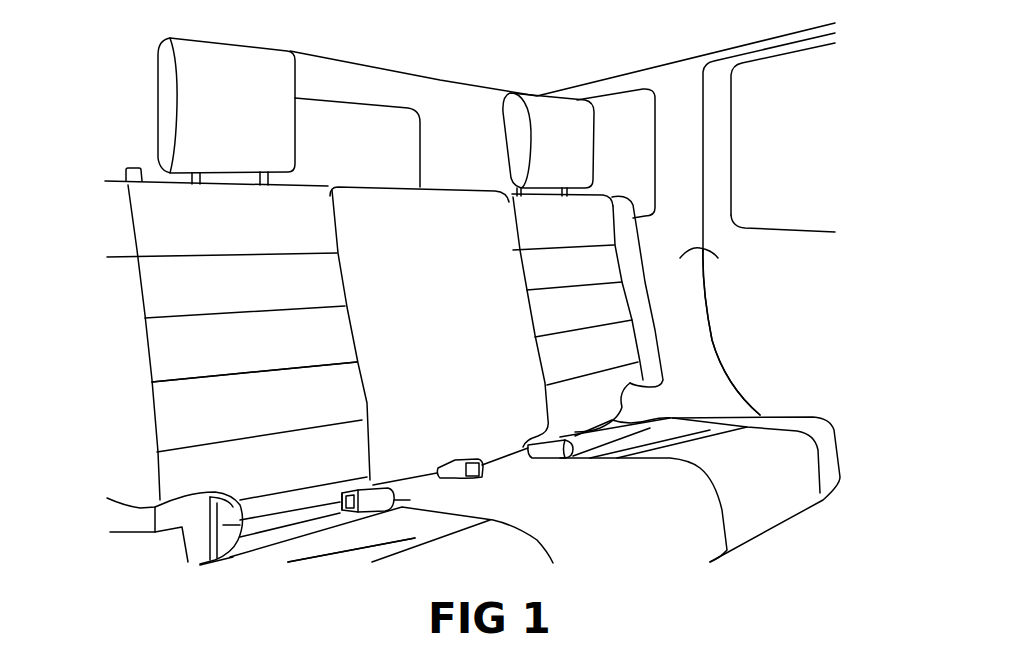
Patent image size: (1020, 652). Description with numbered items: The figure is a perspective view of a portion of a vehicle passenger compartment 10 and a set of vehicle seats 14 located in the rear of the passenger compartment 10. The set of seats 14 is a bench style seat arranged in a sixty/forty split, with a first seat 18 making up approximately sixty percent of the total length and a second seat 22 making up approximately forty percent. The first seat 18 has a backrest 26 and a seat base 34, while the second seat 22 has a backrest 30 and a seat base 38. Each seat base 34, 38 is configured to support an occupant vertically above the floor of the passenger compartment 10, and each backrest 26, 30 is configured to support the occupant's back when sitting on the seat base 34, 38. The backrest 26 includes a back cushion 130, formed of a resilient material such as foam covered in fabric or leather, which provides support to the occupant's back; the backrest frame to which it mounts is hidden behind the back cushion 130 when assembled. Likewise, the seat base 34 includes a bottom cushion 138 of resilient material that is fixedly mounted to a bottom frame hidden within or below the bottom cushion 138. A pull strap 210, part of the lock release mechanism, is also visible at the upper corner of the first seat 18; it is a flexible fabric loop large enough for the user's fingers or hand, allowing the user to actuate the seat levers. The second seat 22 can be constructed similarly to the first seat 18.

The vehicle passenger compartment 10 is at (462, 93).
The pull strap 210 is at (128, 168).
The first seat 18 is at (178, 288).
The backrest 26 is at (172, 353).
The back cushion 130 is at (182, 415).
The second seat 22 is at (608, 343).
The set of vehicle seats 14 is at (643, 272).
The backrest 30 is at (650, 385).
The seat base 34 is at (373, 545).
The bottom cushion 138 is at (415, 540).
The seat base 38 is at (785, 450).